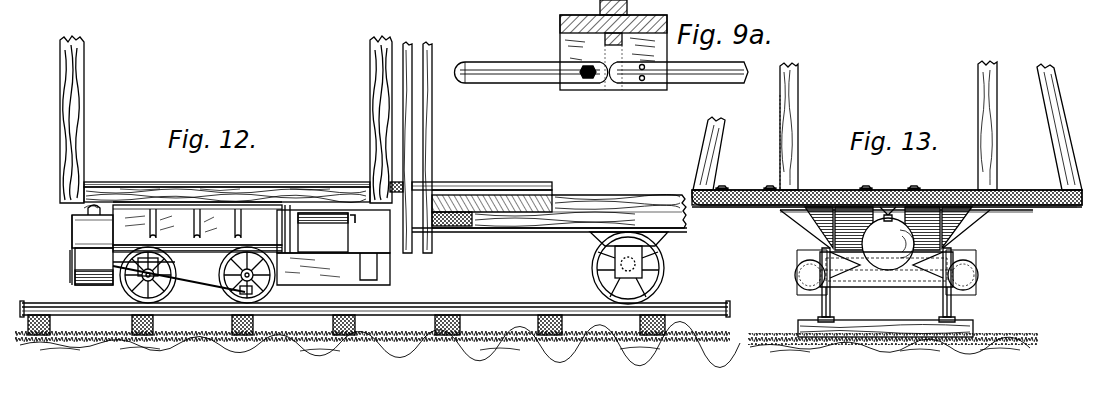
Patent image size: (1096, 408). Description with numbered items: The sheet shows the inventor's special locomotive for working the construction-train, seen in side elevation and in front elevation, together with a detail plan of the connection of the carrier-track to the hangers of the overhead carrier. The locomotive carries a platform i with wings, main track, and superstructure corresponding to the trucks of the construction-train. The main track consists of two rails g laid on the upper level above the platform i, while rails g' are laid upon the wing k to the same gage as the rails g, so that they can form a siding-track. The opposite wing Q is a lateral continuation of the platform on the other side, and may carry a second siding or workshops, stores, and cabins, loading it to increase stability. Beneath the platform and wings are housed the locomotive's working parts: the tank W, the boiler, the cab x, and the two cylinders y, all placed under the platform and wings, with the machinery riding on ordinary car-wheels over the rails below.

In FIG. 12, the rails of the main track g is at (227, 171).
In FIG. 13, the rails of the main track g is at (890, 175).
In FIG. 13, the rails on the wing g' is at (746, 173).
In FIG. 12, the platform i is at (214, 192).
In FIG. 13, the platform i is at (941, 200).
In FIG. 13, the wing k is at (752, 205).
In FIG. 13, the second wing Q is at (1026, 206).
In FIG. 12, the tank W is at (197, 227).
In FIG. 12, the cab x is at (333, 245).
In FIG. 12, the cylinders y is at (91, 266).